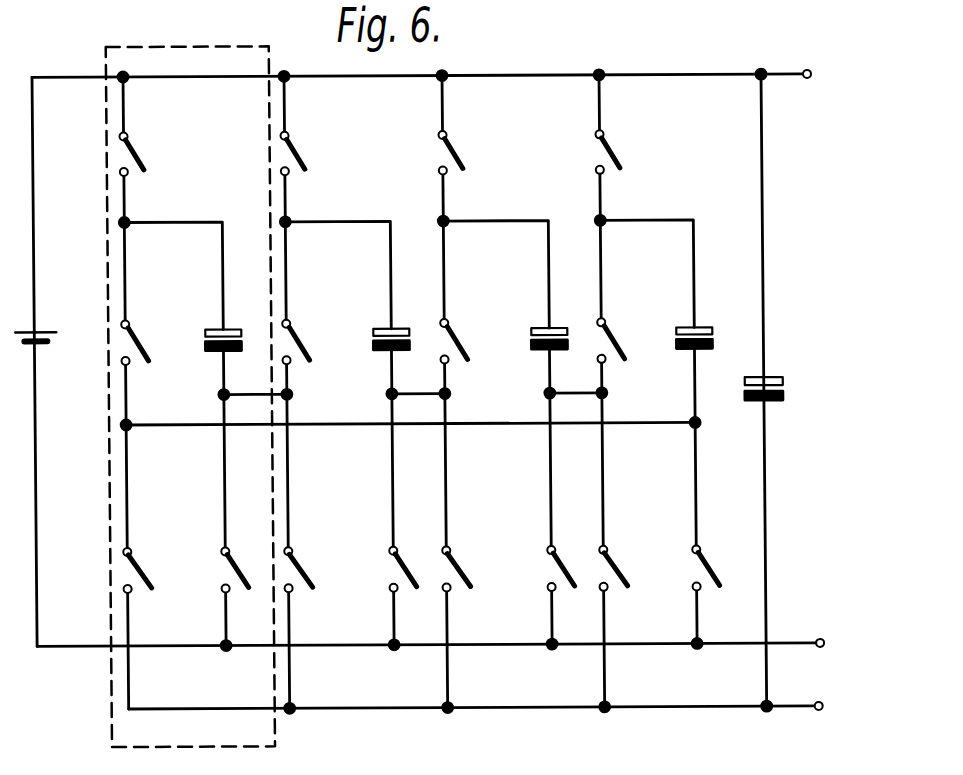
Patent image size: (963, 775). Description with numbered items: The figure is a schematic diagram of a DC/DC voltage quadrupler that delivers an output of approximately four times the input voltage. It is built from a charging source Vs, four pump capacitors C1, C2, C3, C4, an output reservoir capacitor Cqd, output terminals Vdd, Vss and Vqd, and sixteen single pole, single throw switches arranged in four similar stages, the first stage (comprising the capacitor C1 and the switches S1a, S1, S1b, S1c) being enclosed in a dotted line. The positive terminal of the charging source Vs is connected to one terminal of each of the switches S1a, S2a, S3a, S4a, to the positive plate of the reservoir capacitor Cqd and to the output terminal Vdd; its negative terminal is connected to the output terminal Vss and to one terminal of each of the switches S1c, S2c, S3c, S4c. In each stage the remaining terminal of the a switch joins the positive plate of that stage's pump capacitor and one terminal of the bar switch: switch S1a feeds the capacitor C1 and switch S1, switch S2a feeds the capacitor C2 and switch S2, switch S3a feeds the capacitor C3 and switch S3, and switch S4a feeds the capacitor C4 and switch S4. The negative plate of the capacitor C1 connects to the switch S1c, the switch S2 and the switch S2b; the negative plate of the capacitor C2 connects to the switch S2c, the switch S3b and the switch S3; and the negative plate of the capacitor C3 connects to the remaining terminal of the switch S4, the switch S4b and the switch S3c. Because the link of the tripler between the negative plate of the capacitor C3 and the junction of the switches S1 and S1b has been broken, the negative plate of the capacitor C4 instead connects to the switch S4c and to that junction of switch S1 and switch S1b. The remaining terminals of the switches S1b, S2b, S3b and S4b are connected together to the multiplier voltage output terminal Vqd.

The output terminal Vdd is at (442, 74).
The output terminal Vss is at (449, 643).
The multiplier voltage output terminal Vqd is at (497, 704).
The charging source Vs is at (44, 331).
The output reservoir capacitor Cqd is at (767, 378).
The single pole, single throw switch S1a is at (137, 157).
The single pole, single throw switch S2a is at (298, 157).
The single pole, single throw switch S3a is at (456, 157).
The single pole, single throw switch S4a is at (613, 157).
The single pole, single throw switch S1 is at (137, 344).
The single pole, single throw switch S2 is at (298, 344).
The single pole, single throw switch S3 is at (456, 344).
The single pole, single throw switch S4 is at (613, 344).
The pump capacitor C1 is at (232, 330).
The pump capacitor C2 is at (400, 330).
The pump capacitor C3 is at (558, 330).
The pump capacitor C4 is at (703, 330).
The single pole, single throw switch S1b is at (140, 569).
The single pole, single throw switch S2b is at (301, 569).
The single pole, single throw switch S3b is at (459, 569).
The single pole, single throw switch S4b is at (616, 569).
The single pole, single throw switch S1c is at (227, 568).
The single pole, single throw switch S2c is at (395, 568).
The single pole, single throw switch S3c is at (553, 568).
The single pole, single throw switch S4c is at (698, 568).